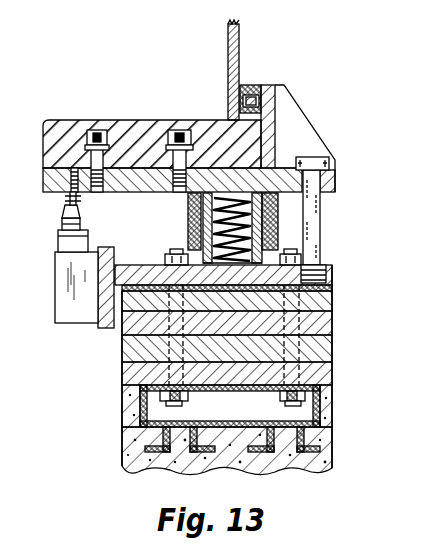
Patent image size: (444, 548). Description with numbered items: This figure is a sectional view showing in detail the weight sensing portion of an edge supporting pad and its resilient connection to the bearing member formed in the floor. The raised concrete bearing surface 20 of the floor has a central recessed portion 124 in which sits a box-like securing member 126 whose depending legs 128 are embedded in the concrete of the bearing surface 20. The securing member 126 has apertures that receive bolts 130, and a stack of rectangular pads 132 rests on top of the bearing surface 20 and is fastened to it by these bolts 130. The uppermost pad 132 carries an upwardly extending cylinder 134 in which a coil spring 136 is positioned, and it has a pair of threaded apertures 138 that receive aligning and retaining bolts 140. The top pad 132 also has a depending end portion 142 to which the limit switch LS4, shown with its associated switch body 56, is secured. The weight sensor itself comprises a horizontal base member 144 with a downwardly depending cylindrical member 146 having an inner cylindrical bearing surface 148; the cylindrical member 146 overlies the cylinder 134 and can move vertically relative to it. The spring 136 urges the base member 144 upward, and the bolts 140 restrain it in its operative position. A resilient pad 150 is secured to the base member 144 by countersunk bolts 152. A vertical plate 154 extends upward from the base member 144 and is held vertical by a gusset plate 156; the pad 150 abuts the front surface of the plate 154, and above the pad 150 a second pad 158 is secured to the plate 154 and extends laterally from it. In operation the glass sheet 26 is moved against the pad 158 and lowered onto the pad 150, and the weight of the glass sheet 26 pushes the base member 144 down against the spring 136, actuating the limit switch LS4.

The bearing surface 20 is at (333, 455).
The glass sheet 26 is at (241, 38).
The limit switch 56 is at (49, 269).
The limit switch LS4 is at (55, 307).
The central recessed portion 124 is at (308, 410).
The box-like securing member 126 is at (330, 398).
The depending legs 128 is at (130, 456).
The bolts 130 is at (333, 303).
The rectangular pads 132 is at (333, 274).
The upwardly extending cylinder 134 is at (276, 246).
The coil spring 136 is at (188, 203).
The threaded apertures 138 is at (330, 266).
The aligning and retaining bolts 140 is at (315, 157).
The depending end portion 142 is at (111, 329).
The base member 144 is at (333, 182).
The cylindrical member 146 is at (180, 215).
The inner cylindrical bearing surface 148 is at (188, 223).
The resilient pad 150 is at (152, 103).
The countersunk bolts 152 is at (96, 128).
The vertical plate 154 is at (274, 115).
The gusset plate 156 is at (302, 118).
The second pad 158 is at (248, 85).